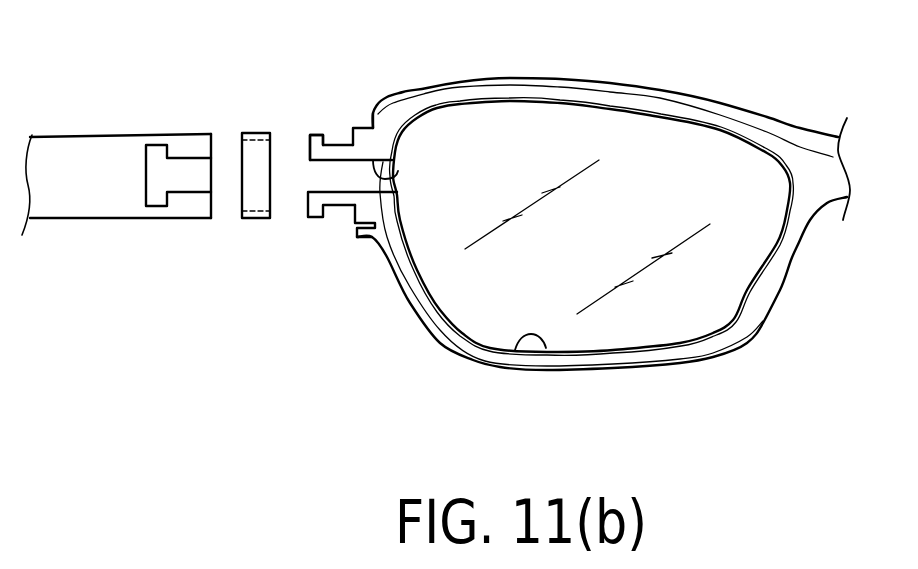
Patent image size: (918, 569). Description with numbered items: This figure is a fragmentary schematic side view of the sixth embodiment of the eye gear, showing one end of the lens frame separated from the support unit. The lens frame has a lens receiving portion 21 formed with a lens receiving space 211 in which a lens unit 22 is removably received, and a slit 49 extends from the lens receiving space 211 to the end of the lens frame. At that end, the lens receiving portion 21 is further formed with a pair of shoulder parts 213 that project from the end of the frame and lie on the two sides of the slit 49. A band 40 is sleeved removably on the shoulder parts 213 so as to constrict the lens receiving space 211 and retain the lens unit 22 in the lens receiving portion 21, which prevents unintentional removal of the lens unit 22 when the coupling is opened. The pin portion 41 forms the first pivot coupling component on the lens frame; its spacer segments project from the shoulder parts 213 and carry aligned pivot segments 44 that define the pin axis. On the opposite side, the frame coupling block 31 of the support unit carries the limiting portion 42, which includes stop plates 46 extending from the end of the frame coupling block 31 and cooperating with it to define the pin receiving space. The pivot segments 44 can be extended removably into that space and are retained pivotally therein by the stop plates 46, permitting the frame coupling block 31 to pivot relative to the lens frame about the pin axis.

The lens receiving portion 21 is at (635, 88).
The lens unit 22 is at (662, 335).
The lens receiving space 211 is at (513, 347).
The shoulder part 213 is at (376, 122).
The frame coupling block 31 is at (65, 147).
The band 40 is at (265, 115).
The pin portion 41 is at (350, 95).
The limiting portion 42 is at (118, 240).
The pivot segment 44 is at (316, 133).
The stop plate 46 is at (195, 137).
The slit 49 is at (397, 172).